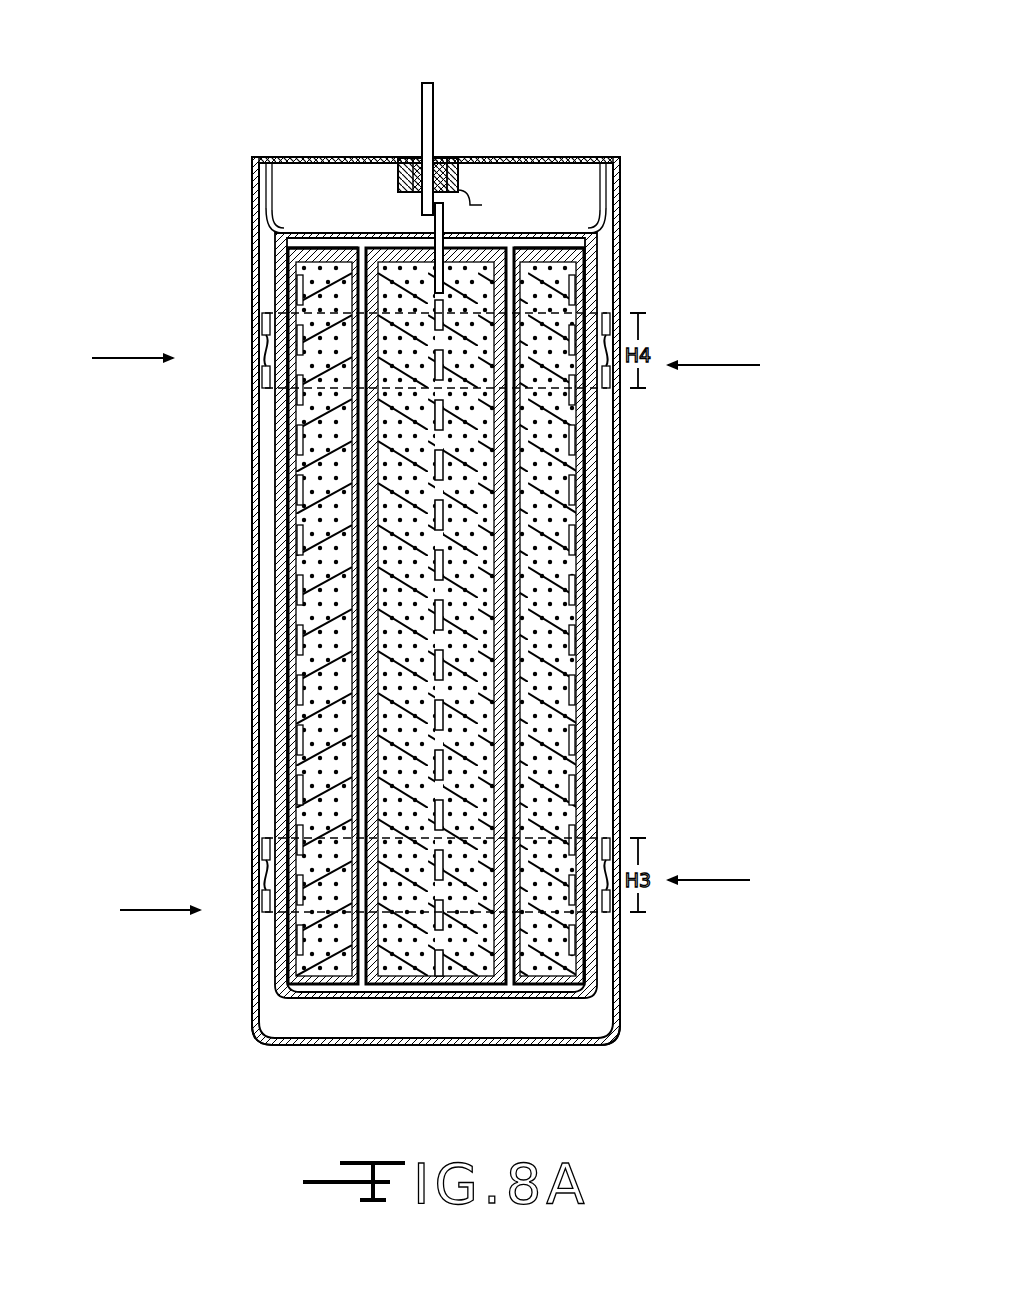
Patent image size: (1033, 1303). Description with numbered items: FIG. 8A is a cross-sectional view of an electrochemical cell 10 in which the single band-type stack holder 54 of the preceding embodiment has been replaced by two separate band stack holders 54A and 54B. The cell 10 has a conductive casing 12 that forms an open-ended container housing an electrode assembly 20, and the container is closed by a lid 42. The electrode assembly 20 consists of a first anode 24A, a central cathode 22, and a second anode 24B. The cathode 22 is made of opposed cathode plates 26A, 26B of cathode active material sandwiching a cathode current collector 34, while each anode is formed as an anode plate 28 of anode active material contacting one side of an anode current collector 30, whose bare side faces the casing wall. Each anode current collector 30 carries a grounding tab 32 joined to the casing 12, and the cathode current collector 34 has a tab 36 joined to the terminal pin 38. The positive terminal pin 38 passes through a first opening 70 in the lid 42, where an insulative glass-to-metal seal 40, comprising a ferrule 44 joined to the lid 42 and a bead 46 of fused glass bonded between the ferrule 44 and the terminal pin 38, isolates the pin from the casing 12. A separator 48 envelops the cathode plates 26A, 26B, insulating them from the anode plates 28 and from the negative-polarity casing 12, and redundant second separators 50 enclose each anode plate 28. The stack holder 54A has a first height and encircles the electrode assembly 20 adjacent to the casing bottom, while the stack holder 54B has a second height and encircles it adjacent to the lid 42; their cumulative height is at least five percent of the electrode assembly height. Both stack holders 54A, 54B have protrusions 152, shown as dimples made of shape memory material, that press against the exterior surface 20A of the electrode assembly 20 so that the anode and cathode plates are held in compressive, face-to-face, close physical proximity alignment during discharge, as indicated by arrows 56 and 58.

The electrochemical cell 10 is at (662, 157).
The conductive casing 12 is at (621, 184).
The electrode assembly 20 is at (453, 656).
The exterior surface of the electrode assembly 20A is at (597, 654).
The cathode 22 is at (421, 683).
The first anode 24A is at (322, 970).
The second anode 24B is at (555, 965).
The cathode plate 26A is at (390, 965).
The cathode plate 26B is at (468, 962).
The anode plate 28 is at (300, 770).
The anode current collector 30 is at (583, 300).
The grounding tab 32 is at (268, 228).
The cathode current collector 34 is at (462, 440).
The tab 36 is at (468, 192).
The terminal pin 38 is at (430, 83).
The insulative seal 40 is at (438, 158).
The lid 42 is at (540, 157).
The ferrule 44 is at (405, 158).
The bead of fused glass 46 is at (415, 158).
The separator 48 is at (392, 247).
The second separator 50 is at (335, 247).
The band stack holder 54 is at (605, 600).
The stack holder 54A is at (268, 845).
The stack holder 54B is at (262, 328).
The arrows 56 is at (733, 620).
The arrows 58 is at (126, 633).
The first opening 70 is at (450, 158).
The protrusions 152 is at (266, 352).